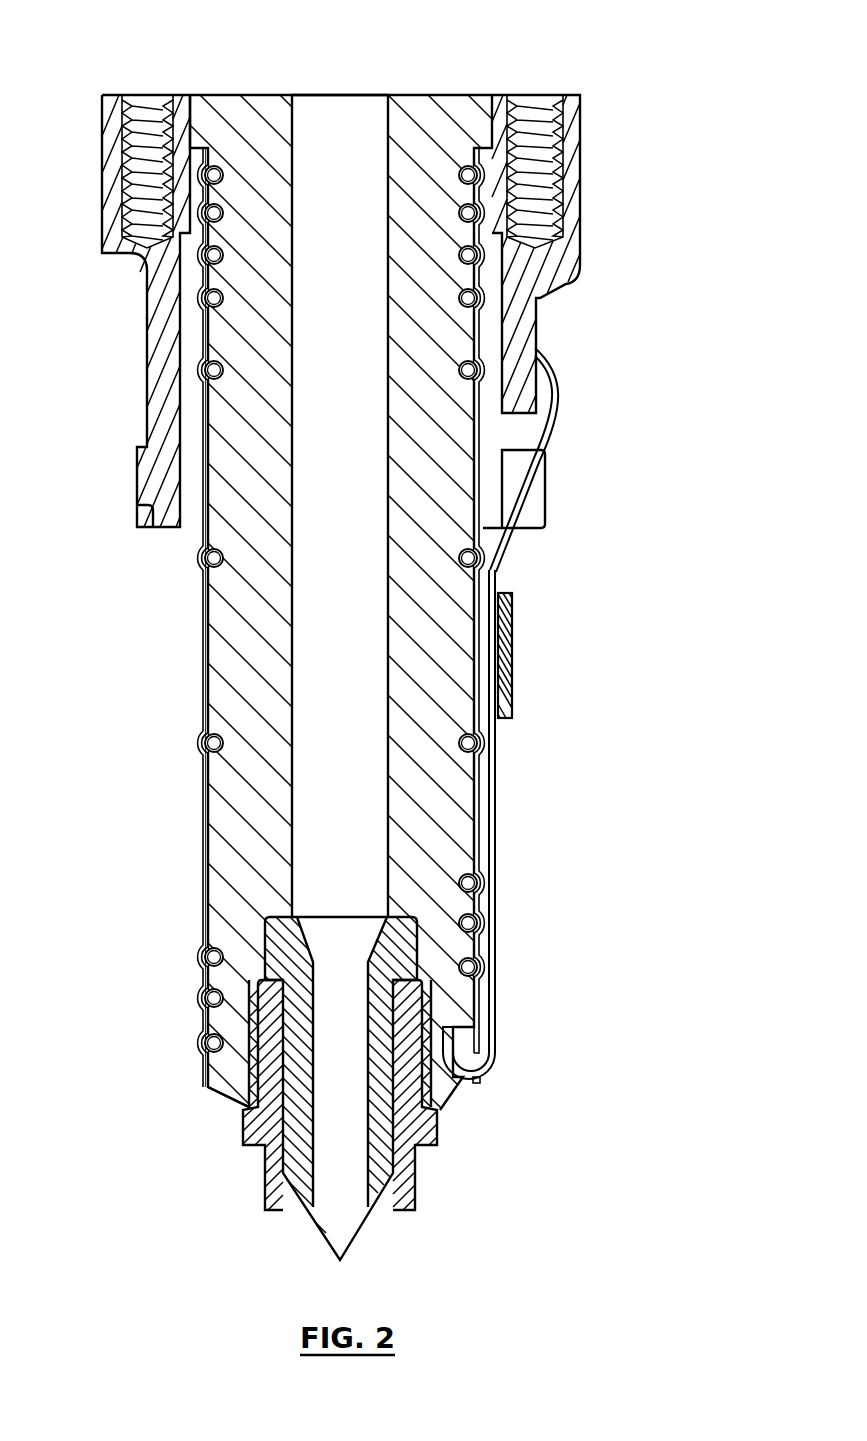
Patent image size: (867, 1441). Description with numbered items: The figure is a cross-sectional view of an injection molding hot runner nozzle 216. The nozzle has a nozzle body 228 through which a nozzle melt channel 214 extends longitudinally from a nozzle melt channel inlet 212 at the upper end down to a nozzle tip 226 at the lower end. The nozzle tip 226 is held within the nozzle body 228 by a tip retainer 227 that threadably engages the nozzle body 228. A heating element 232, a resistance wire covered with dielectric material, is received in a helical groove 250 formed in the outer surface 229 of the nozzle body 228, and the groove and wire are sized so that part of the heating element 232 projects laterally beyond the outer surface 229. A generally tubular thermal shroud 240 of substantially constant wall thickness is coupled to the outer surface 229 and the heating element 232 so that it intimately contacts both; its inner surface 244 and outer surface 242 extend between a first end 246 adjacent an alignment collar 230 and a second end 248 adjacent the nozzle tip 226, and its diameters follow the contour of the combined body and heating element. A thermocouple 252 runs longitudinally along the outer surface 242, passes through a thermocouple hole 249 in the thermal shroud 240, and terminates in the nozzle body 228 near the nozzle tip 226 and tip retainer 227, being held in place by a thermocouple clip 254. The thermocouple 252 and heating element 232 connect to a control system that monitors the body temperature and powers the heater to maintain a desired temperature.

The nozzle melt channel inlet 212 is at (345, 93).
The nozzle melt channel 214 is at (350, 463).
The injection molding hot runner nozzle 216 is at (627, 221).
The nozzle tip 226 is at (333, 1217).
The tip retainer 227 is at (243, 1152).
The nozzle body 228 is at (447, 811).
The outer surface 229 is at (205, 867).
The alignment collar 230 is at (537, 278).
The heating element 232 is at (480, 884).
The thermal shroud 240 is at (207, 808).
The outer surface 242 is at (205, 832).
The inner surface 244 is at (207, 793).
The first end 246 is at (477, 147).
The second end 248 is at (203, 1077).
The thermocouple hole 249 is at (485, 1083).
The helical groove 250 is at (462, 752).
The thermocouple 252 is at (498, 1080).
The thermocouple clip 254 is at (508, 642).